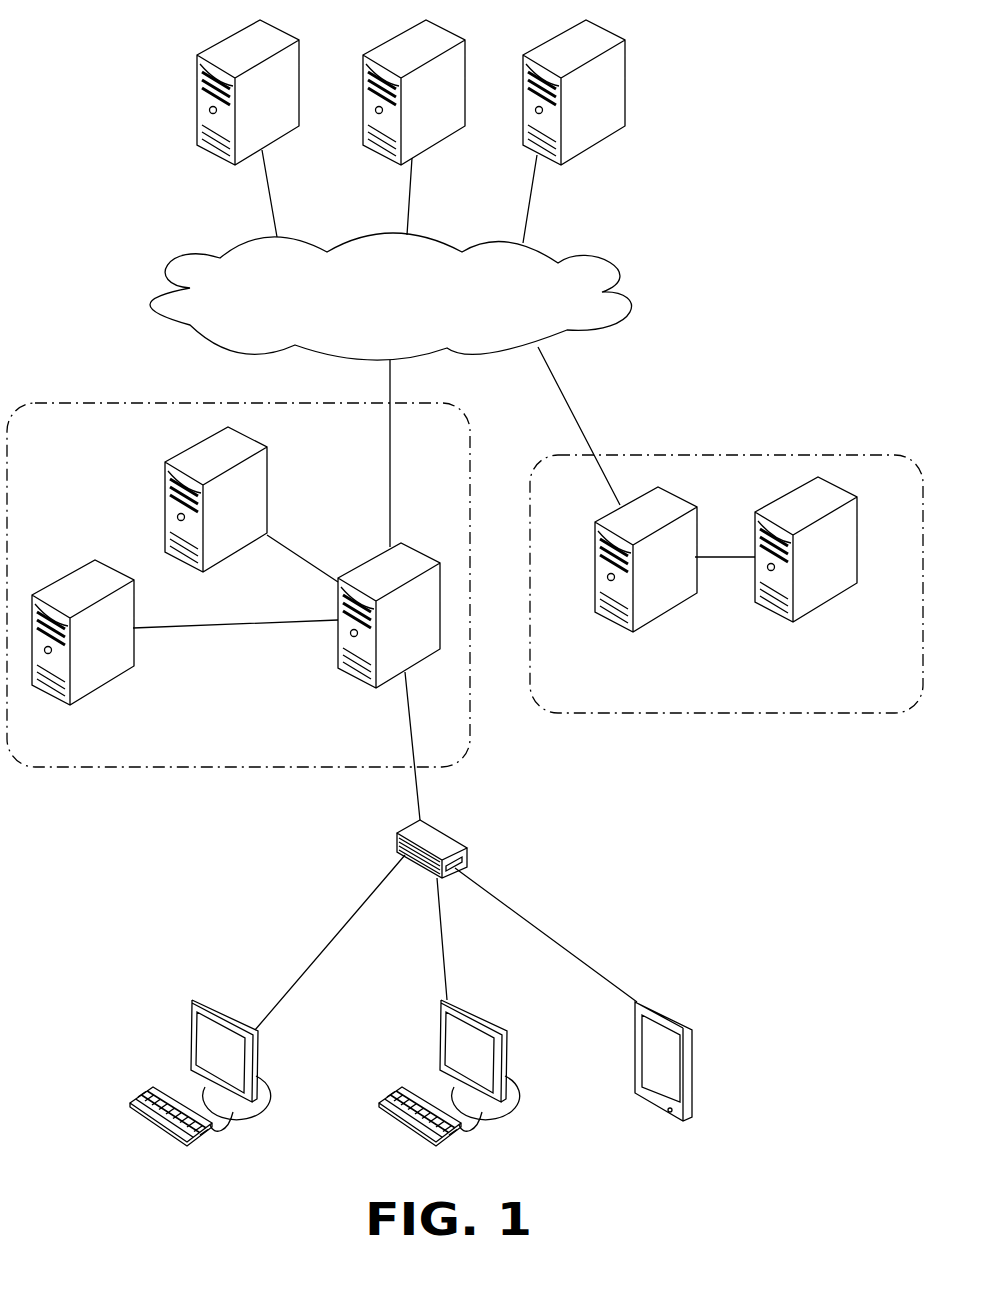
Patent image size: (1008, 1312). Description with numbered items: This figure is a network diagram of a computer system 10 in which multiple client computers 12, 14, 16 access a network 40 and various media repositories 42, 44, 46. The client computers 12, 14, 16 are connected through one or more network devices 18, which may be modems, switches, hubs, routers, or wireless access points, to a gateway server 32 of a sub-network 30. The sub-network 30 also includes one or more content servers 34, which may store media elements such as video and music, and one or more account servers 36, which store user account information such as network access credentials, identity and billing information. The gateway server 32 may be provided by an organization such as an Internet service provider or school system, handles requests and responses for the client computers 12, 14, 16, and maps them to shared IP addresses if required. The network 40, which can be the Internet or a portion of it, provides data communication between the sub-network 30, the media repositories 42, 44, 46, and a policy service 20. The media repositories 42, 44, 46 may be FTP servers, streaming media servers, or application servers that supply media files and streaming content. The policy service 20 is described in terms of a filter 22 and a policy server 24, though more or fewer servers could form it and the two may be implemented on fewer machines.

The computer system 10 is at (796, 222).
The client computer 12 is at (208, 1063).
The client computer 14 is at (457, 1063).
The client computer 16 is at (650, 1070).
The network device 18 is at (425, 842).
The policy service 20 is at (717, 689).
The filter 22 is at (651, 577).
The policy server 24 is at (811, 567).
The sub-network 30 is at (228, 752).
The gateway server 32 is at (394, 633).
The content server 34 is at (221, 517).
The account server 36 is at (88, 650).
The network 40 is at (380, 320).
The media repository 42 is at (253, 110).
The media repository 44 is at (419, 110).
The media repository 46 is at (579, 110).